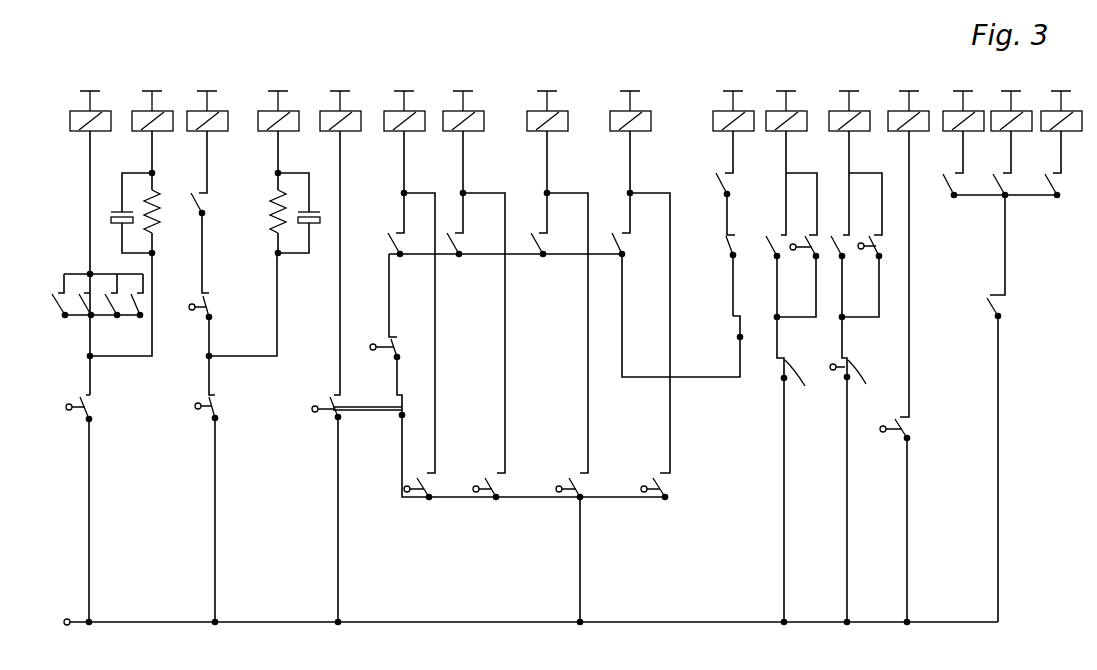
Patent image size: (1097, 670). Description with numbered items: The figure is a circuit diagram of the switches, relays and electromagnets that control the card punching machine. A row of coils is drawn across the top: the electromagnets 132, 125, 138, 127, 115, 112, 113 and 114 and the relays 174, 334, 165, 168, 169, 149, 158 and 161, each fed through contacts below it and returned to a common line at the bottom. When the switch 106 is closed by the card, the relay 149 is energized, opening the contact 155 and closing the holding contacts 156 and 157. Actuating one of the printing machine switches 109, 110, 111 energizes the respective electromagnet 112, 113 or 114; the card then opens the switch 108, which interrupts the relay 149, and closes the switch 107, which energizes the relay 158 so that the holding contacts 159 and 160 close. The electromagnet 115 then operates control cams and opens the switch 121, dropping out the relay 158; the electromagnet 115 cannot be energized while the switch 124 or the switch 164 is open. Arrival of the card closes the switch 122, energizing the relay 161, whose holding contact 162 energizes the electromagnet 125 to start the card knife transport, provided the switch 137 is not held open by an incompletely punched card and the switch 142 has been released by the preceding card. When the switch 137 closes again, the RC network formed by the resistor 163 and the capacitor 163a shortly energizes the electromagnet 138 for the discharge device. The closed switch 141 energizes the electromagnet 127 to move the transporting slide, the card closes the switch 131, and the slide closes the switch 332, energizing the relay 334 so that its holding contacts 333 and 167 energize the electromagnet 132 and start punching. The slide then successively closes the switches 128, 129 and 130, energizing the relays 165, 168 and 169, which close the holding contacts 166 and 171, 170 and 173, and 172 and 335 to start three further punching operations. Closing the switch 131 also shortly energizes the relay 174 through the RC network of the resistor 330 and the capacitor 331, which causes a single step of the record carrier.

The electromagnet 132 is at (83, 112).
The relay 174 is at (144, 116).
The electromagnet 125 is at (223, 112).
The electromagnet 138 is at (287, 113).
The electromagnet 127 is at (352, 113).
The relay 334 is at (418, 113).
The relay 165 is at (478, 113).
The relay 168 is at (560, 115).
The relay 169 is at (645, 113).
The electromagnet 115 is at (722, 112).
The relay 149 is at (800, 113).
The relay 158 is at (865, 113).
The relay 161 is at (893, 115).
The electromagnet 112 is at (955, 112).
The electromagnet 113 is at (998, 112).
The electromagnet 114 is at (1047, 112).
The resistor of RC network 330 is at (158, 192).
The capacitor of RC network 331 is at (118, 221).
The resistor of RC network 163 is at (271, 222).
The capacitor of RC network 163a is at (312, 225).
The holding contact 162 is at (192, 215).
The holding contact 167 is at (51, 302).
The holding contact 171 is at (88, 304).
The holding contact 173 is at (113, 306).
The holding contact 335 is at (146, 304).
The switch 131 is at (78, 425).
The switch 142 is at (196, 325).
The switch 137 is at (203, 425).
The switch 141 is at (326, 423).
The switch 164 is at (405, 395).
The switch 124 is at (389, 338).
The holding contact 333 is at (391, 233).
The holding contact 166 is at (455, 252).
The holding contact 170 is at (531, 258).
The holding contact 172 is at (614, 258).
The switch 332 is at (413, 505).
The switch 128 is at (482, 505).
The switch 129 is at (568, 505).
The switch 130 is at (654, 505).
The holding contact 160 is at (718, 185).
The contact 155 is at (728, 247).
The holding contact 156 is at (764, 258).
The switch 106 is at (806, 263).
The holding contact 159 is at (838, 260).
The switch 107 is at (882, 262).
The switch 108 is at (789, 382).
The switch 121 is at (862, 384).
The switch 122 is at (896, 433).
The switch 109 is at (944, 200).
The switch 110 is at (997, 202).
The switch 111 is at (1050, 203).
The holding contact 157 is at (984, 300).